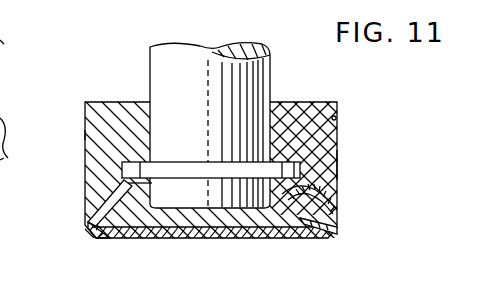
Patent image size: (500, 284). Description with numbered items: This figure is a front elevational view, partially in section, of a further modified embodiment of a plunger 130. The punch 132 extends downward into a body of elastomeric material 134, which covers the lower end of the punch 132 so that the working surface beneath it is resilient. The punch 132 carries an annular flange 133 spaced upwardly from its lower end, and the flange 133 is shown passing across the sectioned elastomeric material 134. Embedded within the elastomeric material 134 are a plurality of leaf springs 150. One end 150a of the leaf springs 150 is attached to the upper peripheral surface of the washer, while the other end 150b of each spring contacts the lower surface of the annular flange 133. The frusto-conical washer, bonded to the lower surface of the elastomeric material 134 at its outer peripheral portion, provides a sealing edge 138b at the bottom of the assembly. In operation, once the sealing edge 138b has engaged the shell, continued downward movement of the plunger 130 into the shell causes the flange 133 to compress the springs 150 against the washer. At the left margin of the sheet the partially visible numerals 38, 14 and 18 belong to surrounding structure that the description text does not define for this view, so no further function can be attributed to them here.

The partial member (138) 38 is at (11, 66).
The housing 14 is at (0, 104).
The member 18 is at (15, 173).
The elastomeric material 134 is at (141, 137).
The punch 132 is at (226, 116).
The annular flange 133 is at (338, 116).
The leaf springs 150 is at (88, 193).
The end of the leaf springs 150a is at (88, 222).
The other end of the spring 150b is at (85, 135).
The plunger 130 is at (341, 165).
The sealing edge 138b is at (336, 230).